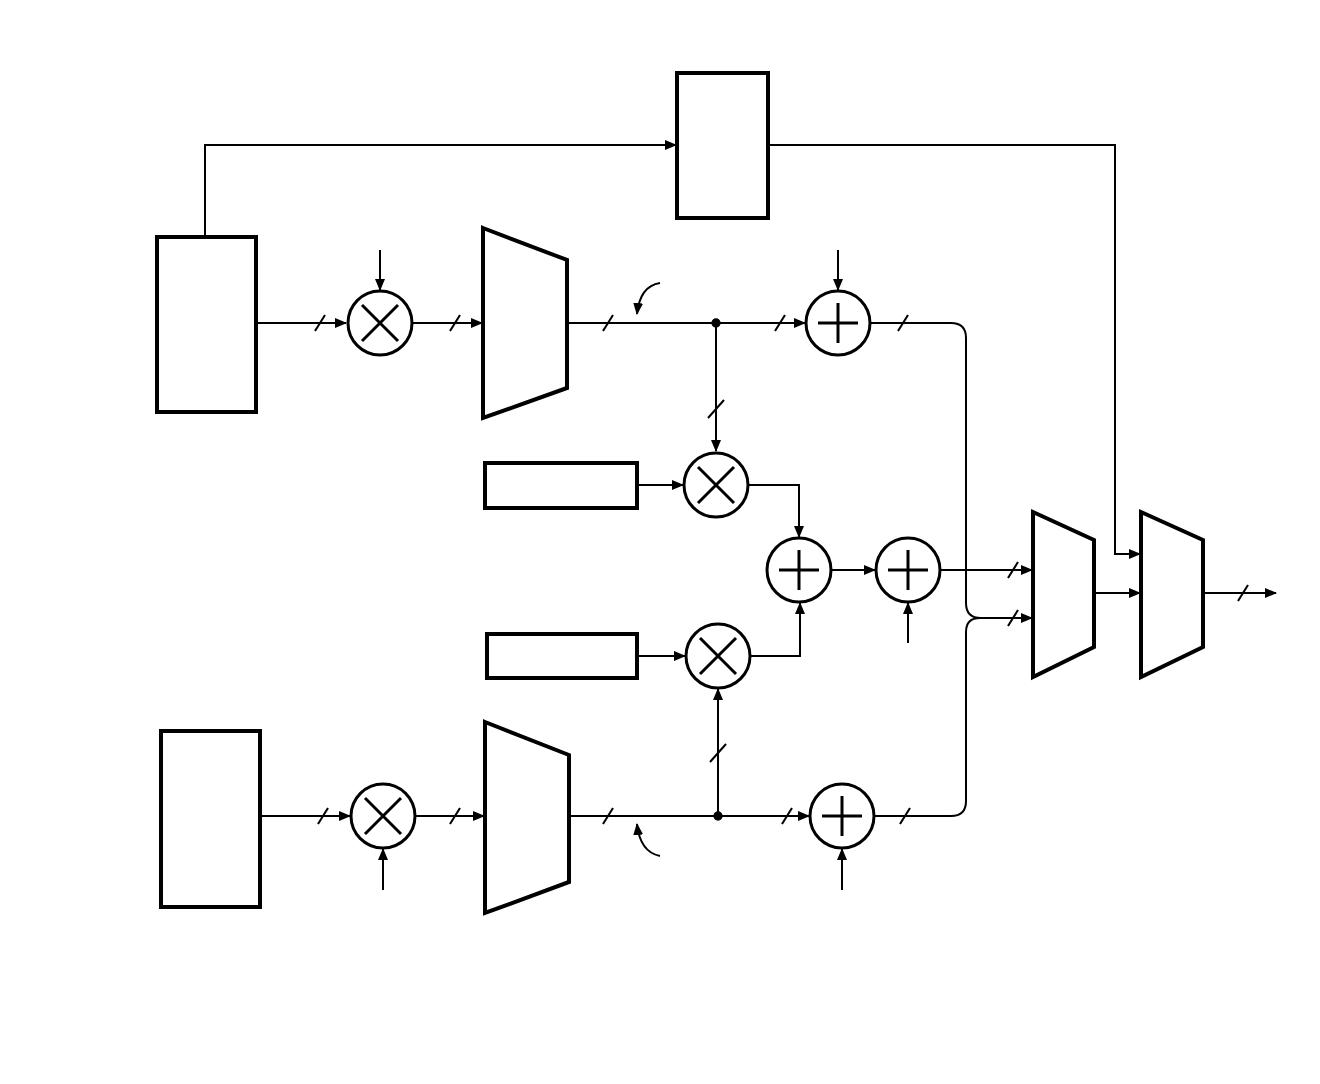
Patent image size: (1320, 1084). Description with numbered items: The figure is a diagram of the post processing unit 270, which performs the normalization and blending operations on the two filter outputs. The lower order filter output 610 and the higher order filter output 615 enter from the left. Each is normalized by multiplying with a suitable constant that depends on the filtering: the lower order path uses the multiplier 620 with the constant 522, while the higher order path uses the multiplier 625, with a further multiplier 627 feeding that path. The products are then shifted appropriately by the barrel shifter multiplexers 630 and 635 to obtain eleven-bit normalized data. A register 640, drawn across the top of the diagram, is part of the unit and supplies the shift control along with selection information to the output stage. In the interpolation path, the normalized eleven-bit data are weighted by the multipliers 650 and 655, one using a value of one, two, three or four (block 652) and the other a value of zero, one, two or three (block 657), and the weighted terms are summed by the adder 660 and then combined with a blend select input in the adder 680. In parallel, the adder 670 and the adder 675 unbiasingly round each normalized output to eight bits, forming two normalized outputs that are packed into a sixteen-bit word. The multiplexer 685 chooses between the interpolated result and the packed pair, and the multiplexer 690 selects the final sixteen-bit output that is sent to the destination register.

The post processing unit 270 is at (1178, 117).
The constant 522 is at (380, 245).
The lower order filter output 610 is at (240, 241).
The higher order filter output 615 is at (245, 736).
The multiplier 620 is at (377, 354).
The multiplier 625 is at (387, 788).
The multiplier 627 is at (383, 893).
The barrel shifter multiplexer 630 is at (532, 250).
The barrel shifter multiplexer 635 is at (536, 745).
The register 640 is at (768, 105).
The multiplier 650 is at (716, 512).
The constant selector 1, 2, 3, or 4 652 is at (623, 468).
The multiplier 655 is at (740, 673).
The constant selector 0, 1, 2, or 3 657 is at (625, 635).
The adder 660 is at (768, 581).
The adder 670 is at (830, 355).
The adder 675 is at (858, 793).
The adder 680 is at (920, 548).
The multiplexer 685 is at (1084, 532).
The multiplexer 690 is at (1192, 532).